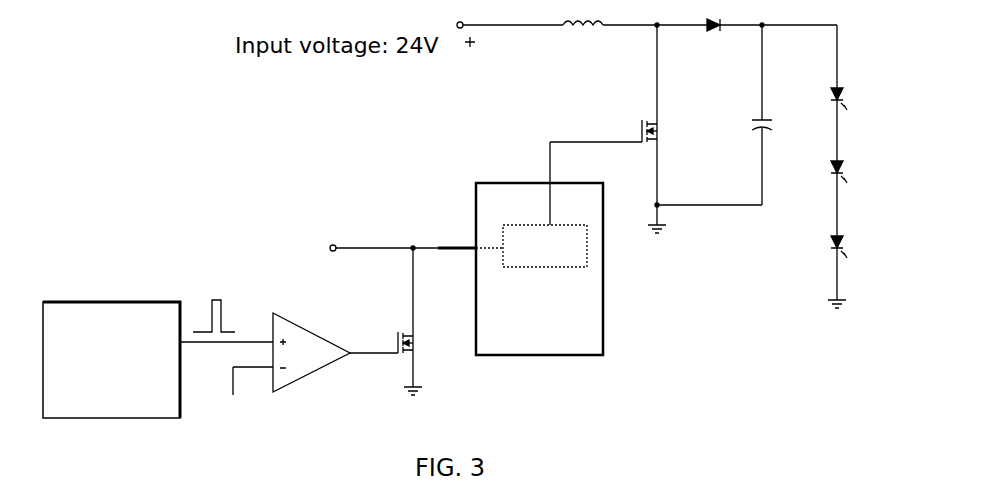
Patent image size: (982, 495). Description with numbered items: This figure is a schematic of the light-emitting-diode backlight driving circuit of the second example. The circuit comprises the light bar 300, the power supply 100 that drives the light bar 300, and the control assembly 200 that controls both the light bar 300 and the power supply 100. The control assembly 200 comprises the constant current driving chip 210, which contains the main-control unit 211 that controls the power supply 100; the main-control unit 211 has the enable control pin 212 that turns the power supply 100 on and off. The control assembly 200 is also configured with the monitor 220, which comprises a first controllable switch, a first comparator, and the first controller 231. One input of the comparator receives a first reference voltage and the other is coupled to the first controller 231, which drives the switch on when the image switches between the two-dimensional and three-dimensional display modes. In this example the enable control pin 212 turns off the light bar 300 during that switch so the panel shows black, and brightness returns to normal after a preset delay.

The power supply 100 is at (627, 67).
The control assembly 200 is at (303, 185).
The constant current driving chip 210 is at (552, 333).
The main-control unit 211 is at (559, 258).
The enable control pin 212 is at (460, 238).
The monitor 220 is at (238, 265).
The first controller 231 is at (124, 373).
The LED light bar 300 is at (820, 218).